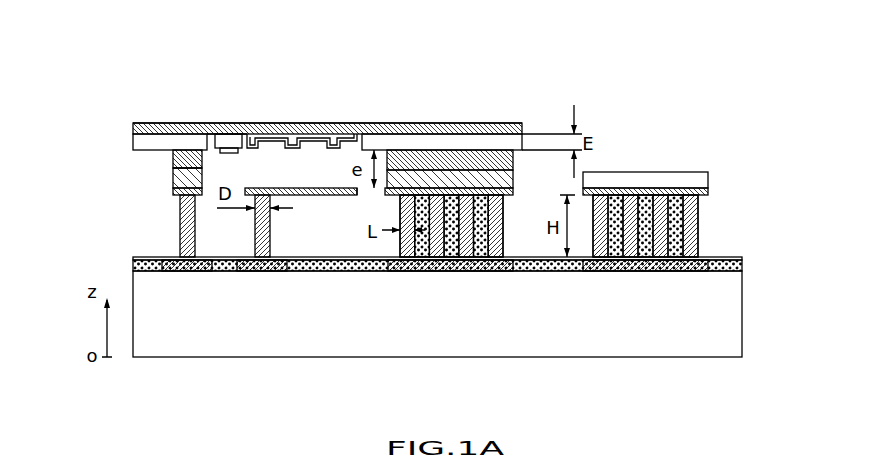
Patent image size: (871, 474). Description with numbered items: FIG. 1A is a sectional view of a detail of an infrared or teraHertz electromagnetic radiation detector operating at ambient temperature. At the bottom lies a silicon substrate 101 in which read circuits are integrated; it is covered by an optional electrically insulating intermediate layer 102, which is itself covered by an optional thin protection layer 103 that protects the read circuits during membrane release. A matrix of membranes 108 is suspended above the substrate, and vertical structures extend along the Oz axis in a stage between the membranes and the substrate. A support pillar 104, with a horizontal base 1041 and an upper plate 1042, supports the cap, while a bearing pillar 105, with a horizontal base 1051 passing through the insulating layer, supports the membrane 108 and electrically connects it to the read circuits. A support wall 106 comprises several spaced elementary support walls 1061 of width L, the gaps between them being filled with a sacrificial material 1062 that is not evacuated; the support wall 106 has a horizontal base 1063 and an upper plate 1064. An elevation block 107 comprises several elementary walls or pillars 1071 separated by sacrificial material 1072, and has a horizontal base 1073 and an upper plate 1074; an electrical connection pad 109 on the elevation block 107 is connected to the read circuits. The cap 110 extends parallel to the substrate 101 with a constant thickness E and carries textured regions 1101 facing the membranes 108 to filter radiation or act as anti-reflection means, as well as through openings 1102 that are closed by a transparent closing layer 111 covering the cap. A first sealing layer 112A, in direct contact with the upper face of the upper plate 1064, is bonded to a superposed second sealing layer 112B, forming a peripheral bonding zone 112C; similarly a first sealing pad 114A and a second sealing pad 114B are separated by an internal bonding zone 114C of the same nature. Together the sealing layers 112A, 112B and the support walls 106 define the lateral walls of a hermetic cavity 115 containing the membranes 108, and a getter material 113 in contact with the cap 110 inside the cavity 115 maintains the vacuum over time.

The substrate 101 is at (742, 310).
The intermediate layer 102 is at (742, 266).
The thin protection layer 103 is at (740, 258).
The support pillar 104 is at (187, 220).
The horizontal base 1041 is at (185, 263).
The bearing pillar 105 is at (260, 238).
The horizontal base 1051 is at (260, 263).
The support wall 106 is at (521, 241).
The elementary support wall 1061 is at (513, 193).
The sacrificial material 1062 is at (503, 228).
The horizontal base 1063 is at (482, 262).
The upper plate 1064 is at (358, 197).
The elevation block 107 is at (704, 182).
The elementary wall or pillar 1071 is at (693, 225).
The sacrificial material 1072 is at (675, 247).
The horizontal base 1073 is at (643, 262).
The upper plate 1074 is at (673, 190).
The membrane 108 is at (313, 196).
The electrical connection pad 109 is at (703, 178).
The cap 110 is at (133, 128).
The textured region 1101 is at (341, 118).
The through opening 1102 is at (215, 127).
The closing layer 111 is at (137, 145).
The first sealing layer 112A is at (480, 173).
The second sealing layer 112B is at (410, 158).
The peripheral bonding zone 112C is at (513, 163).
The getter material 113 is at (232, 137).
The first sealing pad 114A is at (173, 182).
The second sealing pad 114B is at (173, 158).
The internal bonding zone 114C is at (173, 168).
The hermetic cavity 115 is at (278, 168).
The upper plate 1042 is at (172, 192).